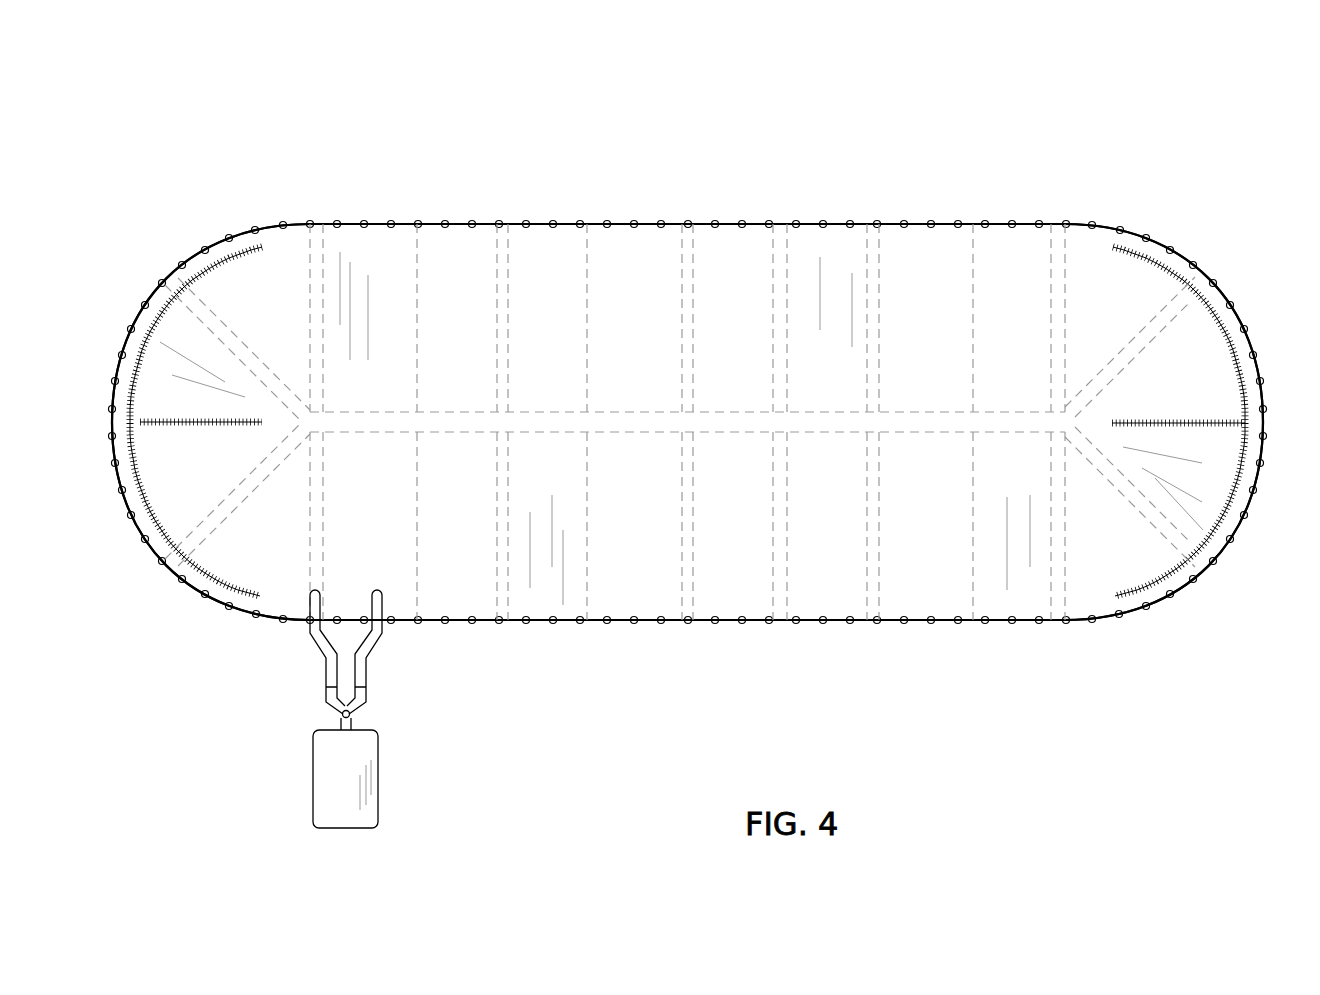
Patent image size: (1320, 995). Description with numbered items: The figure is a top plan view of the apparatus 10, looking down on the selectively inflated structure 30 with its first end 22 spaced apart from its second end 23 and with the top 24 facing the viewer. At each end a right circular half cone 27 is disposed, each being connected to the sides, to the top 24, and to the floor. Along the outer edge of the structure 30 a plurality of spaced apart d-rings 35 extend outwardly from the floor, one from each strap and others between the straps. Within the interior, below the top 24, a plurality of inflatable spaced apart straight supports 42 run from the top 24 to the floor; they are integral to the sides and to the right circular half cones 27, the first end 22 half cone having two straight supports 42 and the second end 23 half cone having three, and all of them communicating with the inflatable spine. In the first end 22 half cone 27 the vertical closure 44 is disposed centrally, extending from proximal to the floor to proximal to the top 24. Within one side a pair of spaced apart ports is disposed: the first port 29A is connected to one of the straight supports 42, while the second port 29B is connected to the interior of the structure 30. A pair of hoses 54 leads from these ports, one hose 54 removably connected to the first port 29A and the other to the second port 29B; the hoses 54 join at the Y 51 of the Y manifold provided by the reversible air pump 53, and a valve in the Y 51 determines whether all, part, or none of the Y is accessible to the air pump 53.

The apparatus 10 is at (752, 703).
The first end 22 is at (100, 393).
The second end 23 is at (1270, 412).
The top 24 is at (537, 405).
The right circular half cone 27 is at (132, 510).
The first port 29A is at (316, 596).
The second port 29B is at (378, 596).
The selectively inflated structure 30 is at (1050, 200).
The d-rings 35 is at (176, 270).
The straight supports 42 is at (232, 328).
The vertical closure 44 is at (185, 425).
The Y 51 is at (332, 698).
The reversible air pump 53 is at (370, 800).
The hoses 54 is at (316, 638).